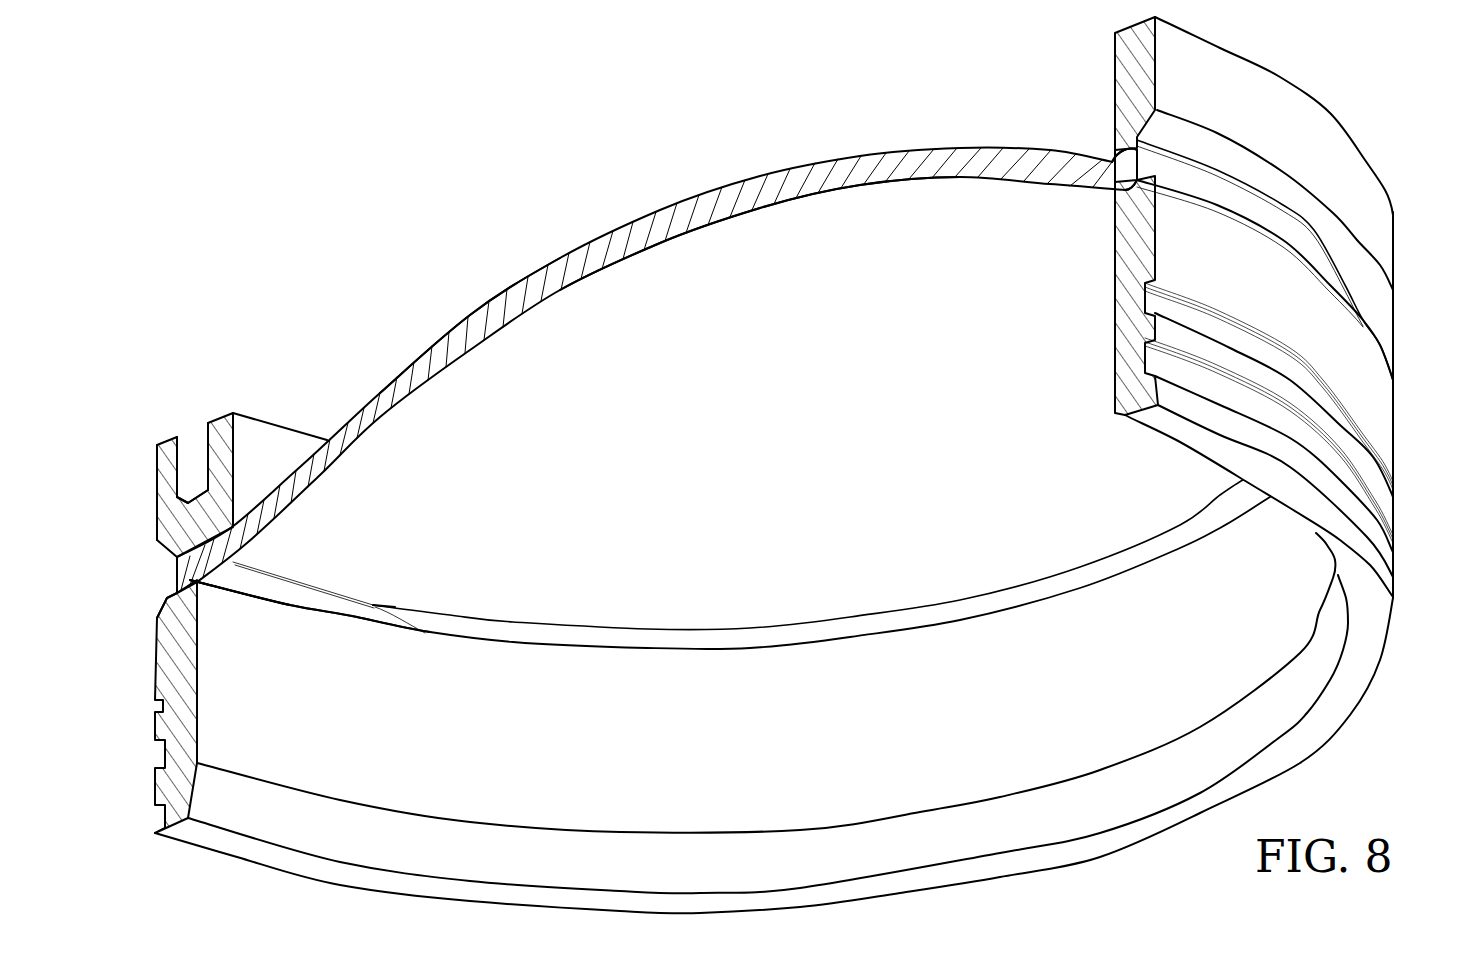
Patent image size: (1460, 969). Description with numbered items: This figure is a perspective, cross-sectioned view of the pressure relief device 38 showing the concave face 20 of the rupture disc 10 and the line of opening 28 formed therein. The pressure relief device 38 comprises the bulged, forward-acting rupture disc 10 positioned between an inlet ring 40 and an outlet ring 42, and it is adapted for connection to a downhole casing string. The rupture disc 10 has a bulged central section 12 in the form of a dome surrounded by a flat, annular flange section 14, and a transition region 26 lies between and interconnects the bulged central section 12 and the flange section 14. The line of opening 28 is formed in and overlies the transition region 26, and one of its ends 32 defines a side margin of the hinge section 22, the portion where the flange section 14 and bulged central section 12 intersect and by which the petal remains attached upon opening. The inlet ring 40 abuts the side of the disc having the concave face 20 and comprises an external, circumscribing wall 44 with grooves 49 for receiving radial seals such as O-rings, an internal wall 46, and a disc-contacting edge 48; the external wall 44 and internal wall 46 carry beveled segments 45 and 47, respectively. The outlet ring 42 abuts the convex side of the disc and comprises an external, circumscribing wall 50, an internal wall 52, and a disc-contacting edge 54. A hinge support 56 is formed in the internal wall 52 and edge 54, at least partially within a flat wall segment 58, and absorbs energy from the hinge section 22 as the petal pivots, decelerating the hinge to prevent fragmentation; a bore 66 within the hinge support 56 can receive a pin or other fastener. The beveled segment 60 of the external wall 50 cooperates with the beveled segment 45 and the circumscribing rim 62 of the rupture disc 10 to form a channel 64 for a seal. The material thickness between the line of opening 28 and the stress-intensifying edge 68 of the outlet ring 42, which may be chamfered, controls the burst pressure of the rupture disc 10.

The rupture disc 10 is at (407, 367).
The bulged central section 12 is at (747, 177).
The flat, annular flange section 14 is at (222, 590).
The concave face 20 is at (830, 339).
The hinge section 22 is at (293, 605).
The transition region 26 is at (1100, 185).
The line of opening 28 is at (752, 632).
The end of line of opening 32 is at (375, 600).
The pressure relief device 38 is at (272, 255).
The inlet ring 40 is at (1410, 461).
The outlet ring 42 is at (1378, 144).
The external, circumscribing wall 44 is at (1180, 233).
The beveled segment 45 is at (158, 611).
The internal wall 46 is at (1230, 650).
The beveled segment 47 is at (1143, 783).
The disc-contacting edge 48 is at (174, 597).
The channels or grooves 49 is at (1160, 363).
The external, circumscribing wall 50 is at (1362, 198).
The internal wall 52 is at (1113, 75).
The disc-contacting edge 54 is at (1110, 160).
The hinge support 56 is at (157, 530).
The wall segment 58 is at (268, 446).
The beveled segment 60 is at (1323, 222).
The circumscribing rim 62 is at (1315, 262).
The channel 64 is at (178, 563).
The bore 66 is at (190, 458).
The stress-intensifying edge 68 is at (1113, 133).